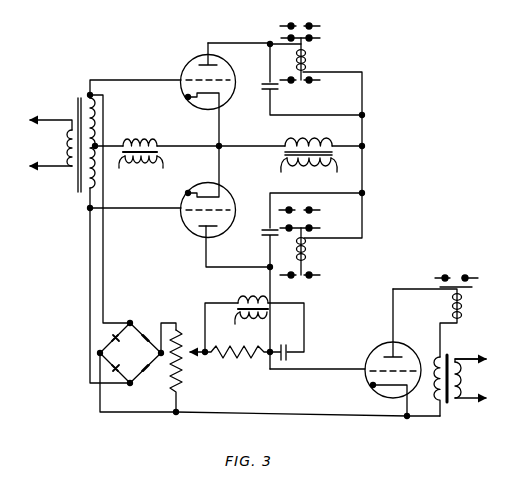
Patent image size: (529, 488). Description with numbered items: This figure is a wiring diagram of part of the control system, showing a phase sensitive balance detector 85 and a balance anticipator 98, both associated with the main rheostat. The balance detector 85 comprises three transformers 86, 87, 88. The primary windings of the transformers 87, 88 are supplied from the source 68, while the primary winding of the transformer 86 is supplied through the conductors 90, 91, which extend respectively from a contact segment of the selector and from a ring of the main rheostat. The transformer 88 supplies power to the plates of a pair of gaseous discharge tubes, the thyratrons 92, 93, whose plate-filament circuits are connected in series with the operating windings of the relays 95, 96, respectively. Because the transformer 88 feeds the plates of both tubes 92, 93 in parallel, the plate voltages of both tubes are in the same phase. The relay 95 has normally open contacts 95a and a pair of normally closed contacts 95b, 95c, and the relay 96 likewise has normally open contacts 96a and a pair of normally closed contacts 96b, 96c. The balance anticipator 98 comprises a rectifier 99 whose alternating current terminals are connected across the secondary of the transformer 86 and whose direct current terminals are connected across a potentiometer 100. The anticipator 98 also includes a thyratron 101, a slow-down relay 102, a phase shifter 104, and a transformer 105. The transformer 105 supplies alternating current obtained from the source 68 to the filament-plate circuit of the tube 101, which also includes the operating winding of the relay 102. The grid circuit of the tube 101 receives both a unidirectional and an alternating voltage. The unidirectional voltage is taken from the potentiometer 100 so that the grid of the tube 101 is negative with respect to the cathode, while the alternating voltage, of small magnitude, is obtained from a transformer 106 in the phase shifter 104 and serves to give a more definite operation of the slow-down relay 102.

The phase sensitive balance detector 85 is at (165, 50).
The transformer 86 is at (72, 171).
The transformer 87 is at (165, 150).
The source 68 is at (468, 404).
The transformer 88 is at (279, 152).
The conductor 90 is at (41, 163).
The conductor 91 is at (49, 118).
The thyratron 92 is at (232, 100).
The thyratron 93 is at (182, 232).
The relay 95 is at (318, 62).
The normally open contacts 95a is at (310, 22).
The normally closed contacts 95b is at (313, 40).
The normally closed contacts 95c is at (313, 82).
The relay 96 is at (314, 256).
The normally open contacts 96a is at (310, 210).
The normally closed contacts 96b is at (312, 228).
The normally closed contacts 96c is at (312, 279).
The balance anticipator 98 is at (178, 297).
The rectifier 99 is at (135, 385).
The potentiometer 100 is at (185, 366).
The thyratron 101 is at (382, 347).
The slow-down relay 102 is at (470, 307).
The phase shifter 104 is at (331, 328).
The transformer 105 is at (455, 405).
The transformer 106 is at (239, 314).